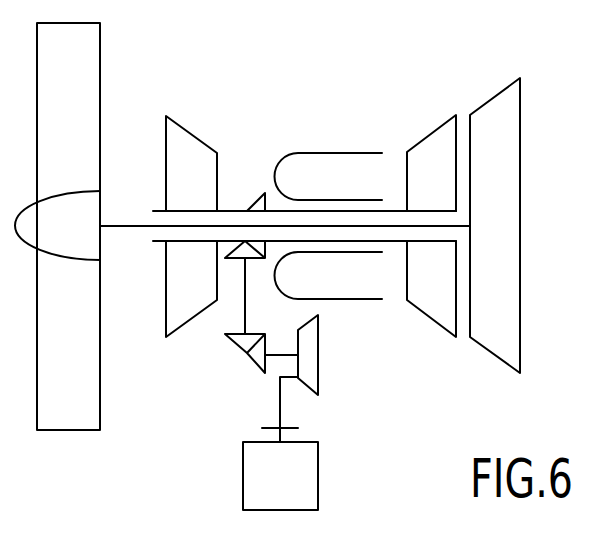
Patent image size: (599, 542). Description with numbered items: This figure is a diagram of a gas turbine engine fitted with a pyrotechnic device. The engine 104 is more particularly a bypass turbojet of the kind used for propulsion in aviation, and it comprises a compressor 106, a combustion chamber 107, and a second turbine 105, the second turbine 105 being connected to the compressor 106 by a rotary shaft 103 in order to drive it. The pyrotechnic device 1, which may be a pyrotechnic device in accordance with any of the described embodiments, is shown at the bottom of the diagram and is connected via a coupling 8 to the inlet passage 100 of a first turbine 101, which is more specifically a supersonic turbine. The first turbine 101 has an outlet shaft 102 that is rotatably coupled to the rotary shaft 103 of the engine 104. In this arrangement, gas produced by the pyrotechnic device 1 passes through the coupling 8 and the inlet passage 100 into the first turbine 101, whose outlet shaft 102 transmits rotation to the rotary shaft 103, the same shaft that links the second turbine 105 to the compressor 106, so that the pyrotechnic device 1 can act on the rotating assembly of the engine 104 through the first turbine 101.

The pyrotechnic device 1 is at (288, 488).
The coupling 8 is at (292, 428).
The inlet passage 100 is at (280, 409).
The first turbine 101 is at (310, 366).
The outlet shaft 102 is at (283, 352).
The rotary shaft 103 is at (398, 209).
The engine 104 is at (345, 82).
The second turbine 105 is at (434, 145).
The compressor 106 is at (187, 145).
The combustion chamber 107 is at (338, 151).